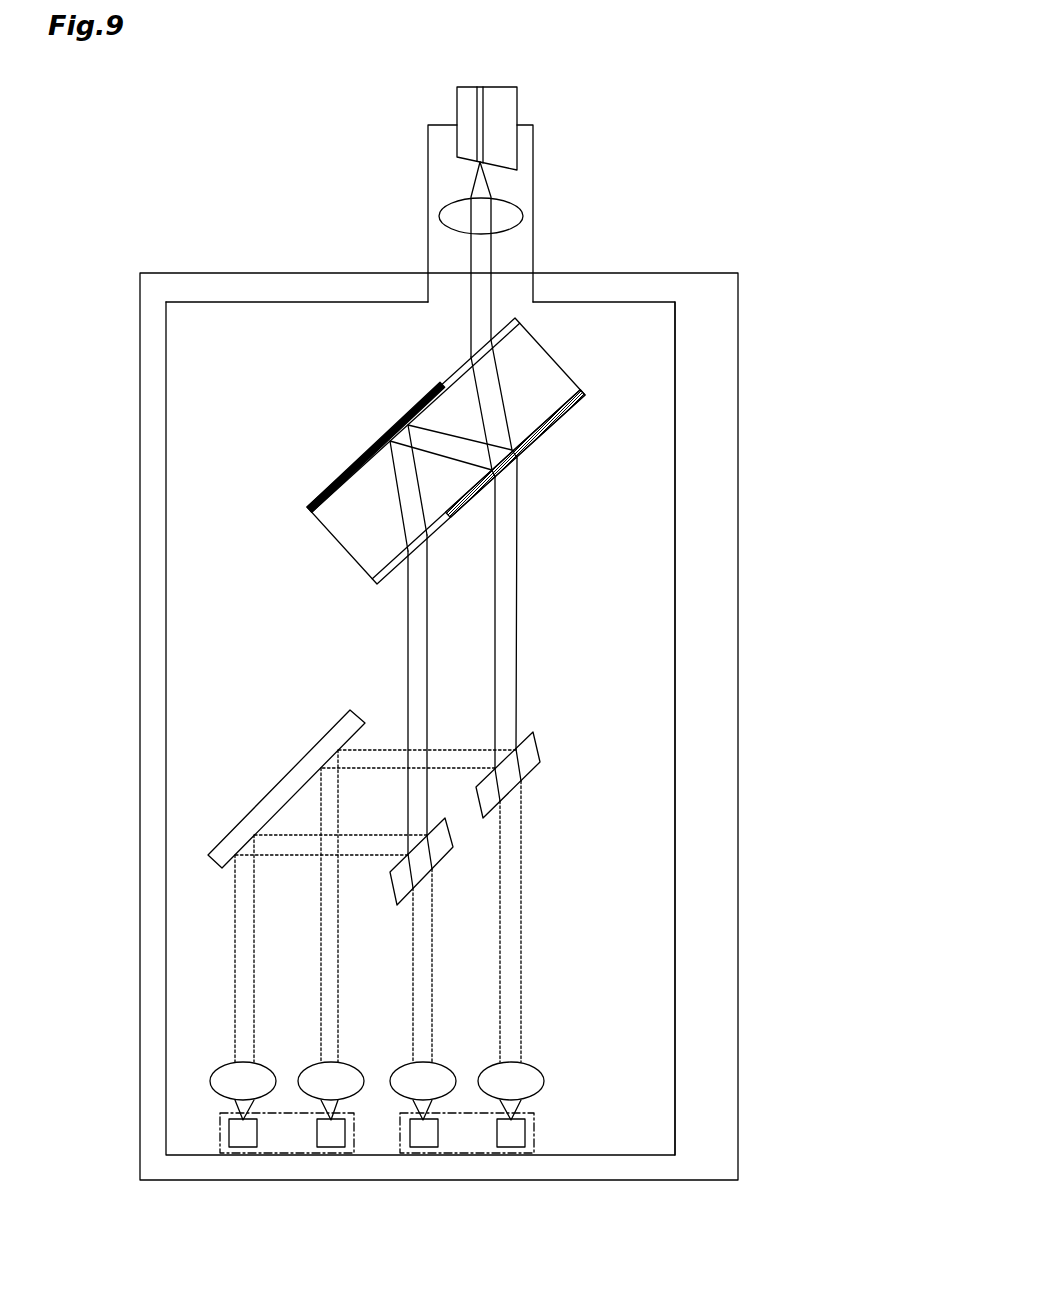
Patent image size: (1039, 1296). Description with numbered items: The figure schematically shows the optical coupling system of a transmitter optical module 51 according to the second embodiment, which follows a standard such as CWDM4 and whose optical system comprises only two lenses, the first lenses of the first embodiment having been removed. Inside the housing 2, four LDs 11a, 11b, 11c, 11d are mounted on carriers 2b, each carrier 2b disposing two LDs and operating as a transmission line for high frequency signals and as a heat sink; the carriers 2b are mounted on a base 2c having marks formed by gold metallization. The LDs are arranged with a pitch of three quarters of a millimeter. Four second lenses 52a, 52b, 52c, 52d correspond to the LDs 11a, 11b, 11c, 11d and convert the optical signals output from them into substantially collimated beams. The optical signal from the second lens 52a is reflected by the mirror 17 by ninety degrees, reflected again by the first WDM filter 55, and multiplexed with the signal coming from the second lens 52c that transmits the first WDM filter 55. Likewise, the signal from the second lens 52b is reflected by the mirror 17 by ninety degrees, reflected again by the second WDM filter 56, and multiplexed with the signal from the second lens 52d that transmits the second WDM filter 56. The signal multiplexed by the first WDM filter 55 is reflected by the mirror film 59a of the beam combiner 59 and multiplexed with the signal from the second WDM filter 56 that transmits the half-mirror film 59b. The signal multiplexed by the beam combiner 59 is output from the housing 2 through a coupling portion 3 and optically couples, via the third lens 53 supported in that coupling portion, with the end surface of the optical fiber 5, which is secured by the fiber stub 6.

The transmitter optical module 51 is at (663, 84).
The housing 2 is at (683, 271).
The carrier 2b is at (220, 1128).
The base 2c is at (635, 1038).
The receptacle 3 is at (534, 180).
The optical fiber 5 is at (481, 150).
The fiber stub 6 is at (510, 102).
The third lens 53 is at (519, 214).
The beam combiner 59 is at (469, 451).
The mirror film 59a is at (357, 457).
The half-mirror film 59b is at (528, 440).
The mirror 17 is at (275, 790).
The first WDM filter 55 is at (397, 884).
The second WDM filter 56 is at (538, 745).
The second lens 52a is at (227, 1063).
The second lens 52b is at (315, 1063).
The second lens 52c is at (406, 1063).
The second lens 52d is at (495, 1063).
The LD 11a is at (240, 1133).
The LD 11b is at (330, 1133).
The LD 11c is at (423, 1133).
The LD 11d is at (512, 1133).